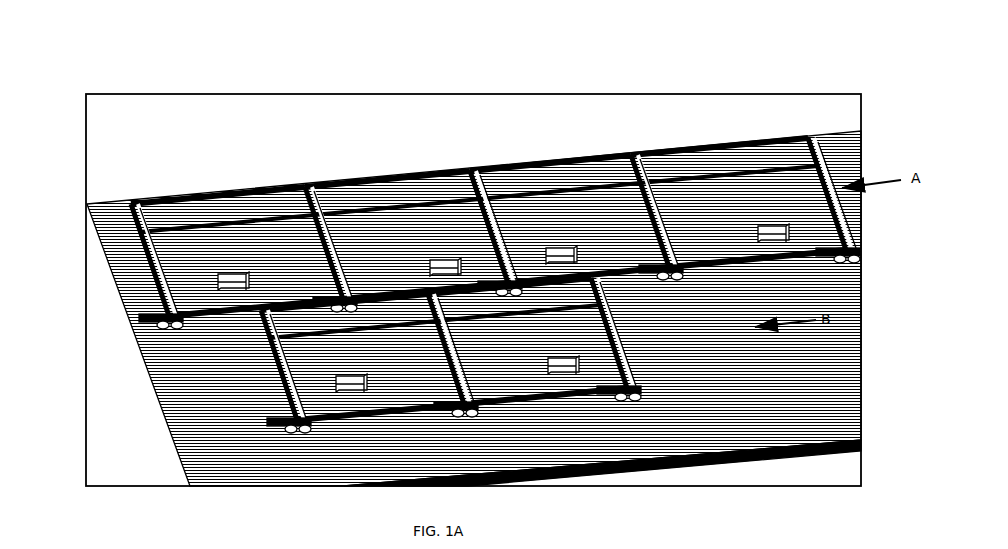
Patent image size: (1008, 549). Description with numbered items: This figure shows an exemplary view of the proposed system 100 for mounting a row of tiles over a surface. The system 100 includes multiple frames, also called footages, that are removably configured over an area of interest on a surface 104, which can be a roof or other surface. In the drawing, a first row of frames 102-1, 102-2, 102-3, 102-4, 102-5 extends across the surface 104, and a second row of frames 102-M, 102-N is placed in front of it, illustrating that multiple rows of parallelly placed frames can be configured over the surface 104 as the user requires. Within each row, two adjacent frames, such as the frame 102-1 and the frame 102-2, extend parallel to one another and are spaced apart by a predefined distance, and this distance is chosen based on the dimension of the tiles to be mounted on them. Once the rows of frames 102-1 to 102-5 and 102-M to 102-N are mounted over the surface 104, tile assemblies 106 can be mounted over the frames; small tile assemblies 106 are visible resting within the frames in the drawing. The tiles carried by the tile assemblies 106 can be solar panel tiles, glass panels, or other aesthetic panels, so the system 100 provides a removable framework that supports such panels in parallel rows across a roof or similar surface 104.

The system 100 is at (110, 43).
The frame 102-1 is at (146, 183).
The frame 102-2 is at (301, 173).
The frame 102-3 is at (465, 154).
The frame 102-4 is at (630, 143).
The frame 102-5 is at (813, 147).
The frame 102-M is at (257, 370).
The frame 102-N is at (623, 347).
The surface 104 is at (825, 398).
The tile assembly 106 is at (242, 265).